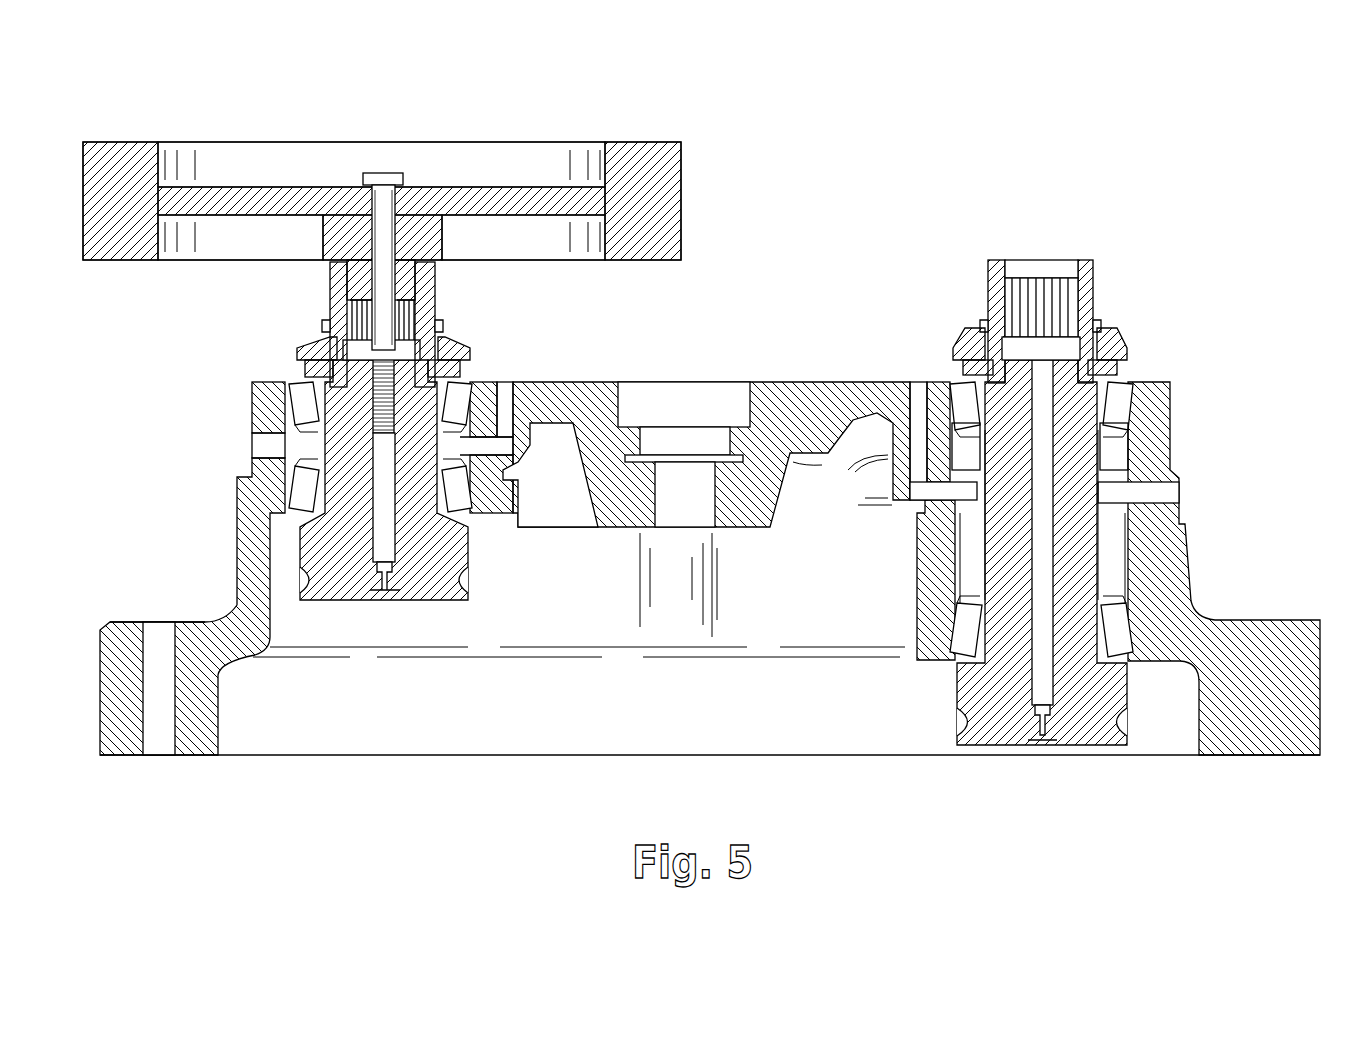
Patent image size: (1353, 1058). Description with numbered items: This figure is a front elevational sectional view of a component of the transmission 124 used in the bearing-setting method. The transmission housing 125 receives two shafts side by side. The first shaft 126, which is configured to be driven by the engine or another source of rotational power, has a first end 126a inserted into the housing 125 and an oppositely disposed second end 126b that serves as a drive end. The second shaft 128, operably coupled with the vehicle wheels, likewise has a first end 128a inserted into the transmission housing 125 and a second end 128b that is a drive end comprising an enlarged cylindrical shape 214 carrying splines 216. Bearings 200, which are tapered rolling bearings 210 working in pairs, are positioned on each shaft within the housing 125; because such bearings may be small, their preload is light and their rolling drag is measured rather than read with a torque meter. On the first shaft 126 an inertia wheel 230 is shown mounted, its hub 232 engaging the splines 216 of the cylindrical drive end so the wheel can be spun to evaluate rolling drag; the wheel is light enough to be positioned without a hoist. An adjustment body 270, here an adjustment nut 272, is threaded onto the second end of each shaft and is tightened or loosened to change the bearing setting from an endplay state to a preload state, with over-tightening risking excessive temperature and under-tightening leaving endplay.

The transmission 124 is at (272, 766).
The housing 125 is at (353, 757).
The first shaft 126 is at (318, 306).
The first end 126a is at (388, 540).
The second end 126b is at (337, 285).
The second shaft 128 is at (1108, 310).
The first end 128a is at (1000, 717).
The second end 128b is at (997, 293).
The bearings 200 is at (949, 328).
The tapered rolling bearings 210 is at (963, 390).
The enlarged cylindrical shape 214 is at (1070, 262).
The splines 216 is at (1028, 307).
The inertia wheel 230 is at (238, 143).
The hub 232 is at (405, 275).
The adjustment body 270 is at (466, 343).
The adjustment nut 272 is at (297, 347).